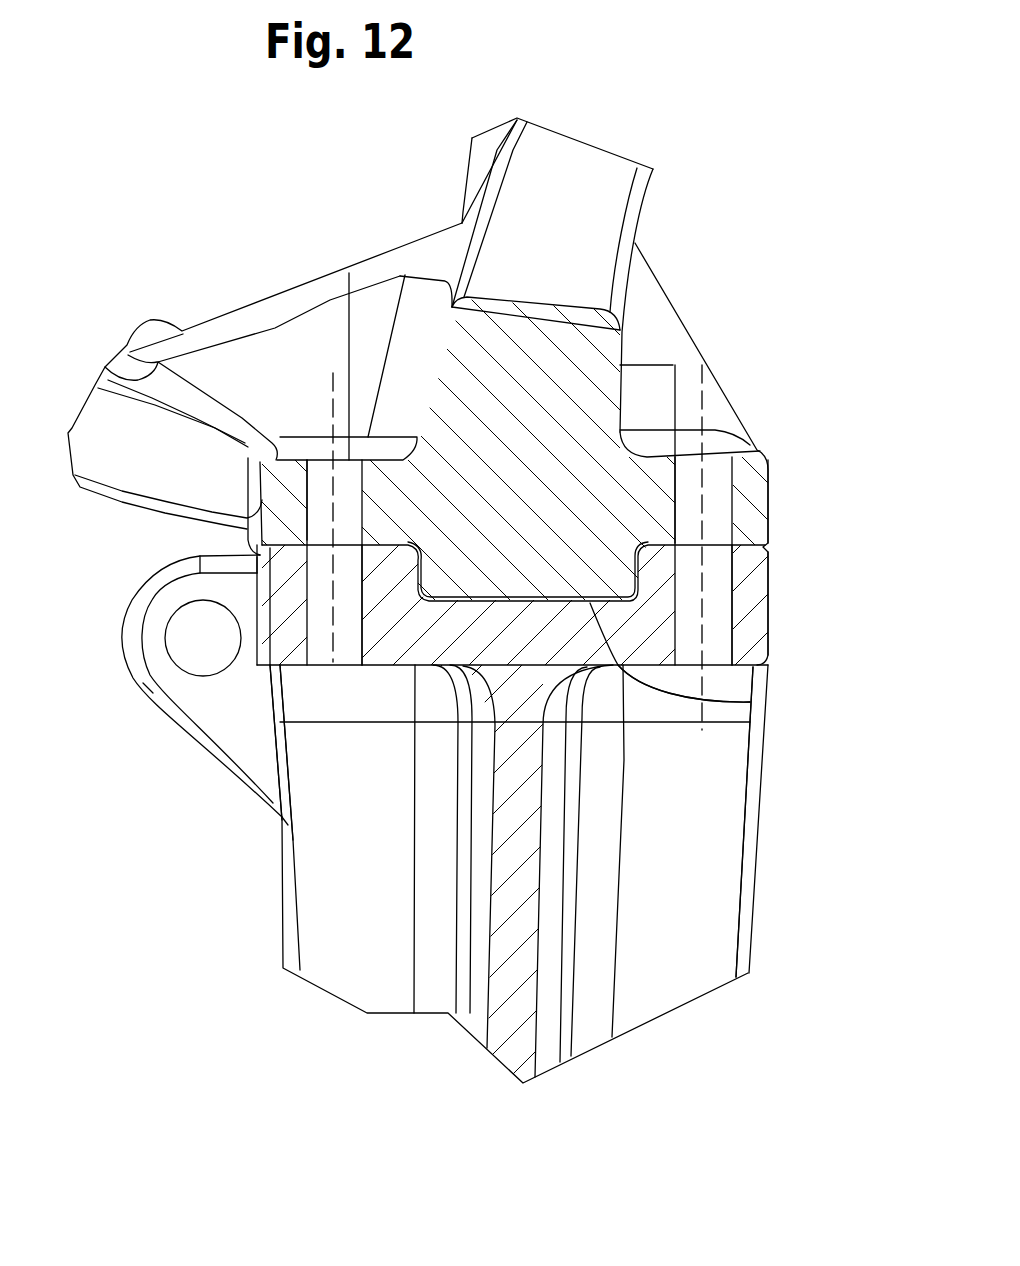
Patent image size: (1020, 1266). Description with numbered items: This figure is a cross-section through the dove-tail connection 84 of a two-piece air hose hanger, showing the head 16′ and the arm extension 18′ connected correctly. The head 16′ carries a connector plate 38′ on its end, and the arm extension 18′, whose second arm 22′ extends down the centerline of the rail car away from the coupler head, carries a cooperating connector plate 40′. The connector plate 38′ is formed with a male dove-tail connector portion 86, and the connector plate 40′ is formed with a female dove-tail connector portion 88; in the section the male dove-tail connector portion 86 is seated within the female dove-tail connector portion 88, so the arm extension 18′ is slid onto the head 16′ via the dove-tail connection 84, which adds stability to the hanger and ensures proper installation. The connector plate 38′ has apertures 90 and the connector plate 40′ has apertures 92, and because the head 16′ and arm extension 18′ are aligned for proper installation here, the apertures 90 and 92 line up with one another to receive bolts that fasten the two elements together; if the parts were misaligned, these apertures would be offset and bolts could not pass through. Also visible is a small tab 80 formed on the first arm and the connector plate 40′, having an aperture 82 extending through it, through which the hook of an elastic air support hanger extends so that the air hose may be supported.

The head portion 16′ is at (600, 228).
The arm extension 18′ is at (775, 987).
The second arm 22′ is at (732, 825).
The connector plate 38′ is at (755, 475).
The connector plate 40′ is at (757, 610).
The tab 80 is at (148, 638).
The aperture 82 is at (220, 652).
The dove-tail connection 84 is at (417, 607).
The male dove-tail connector portion 86 is at (521, 585).
The female dove-tail connector portion 88 is at (750, 702).
The apertures 90 is at (722, 517).
The apertures 92 is at (715, 643).